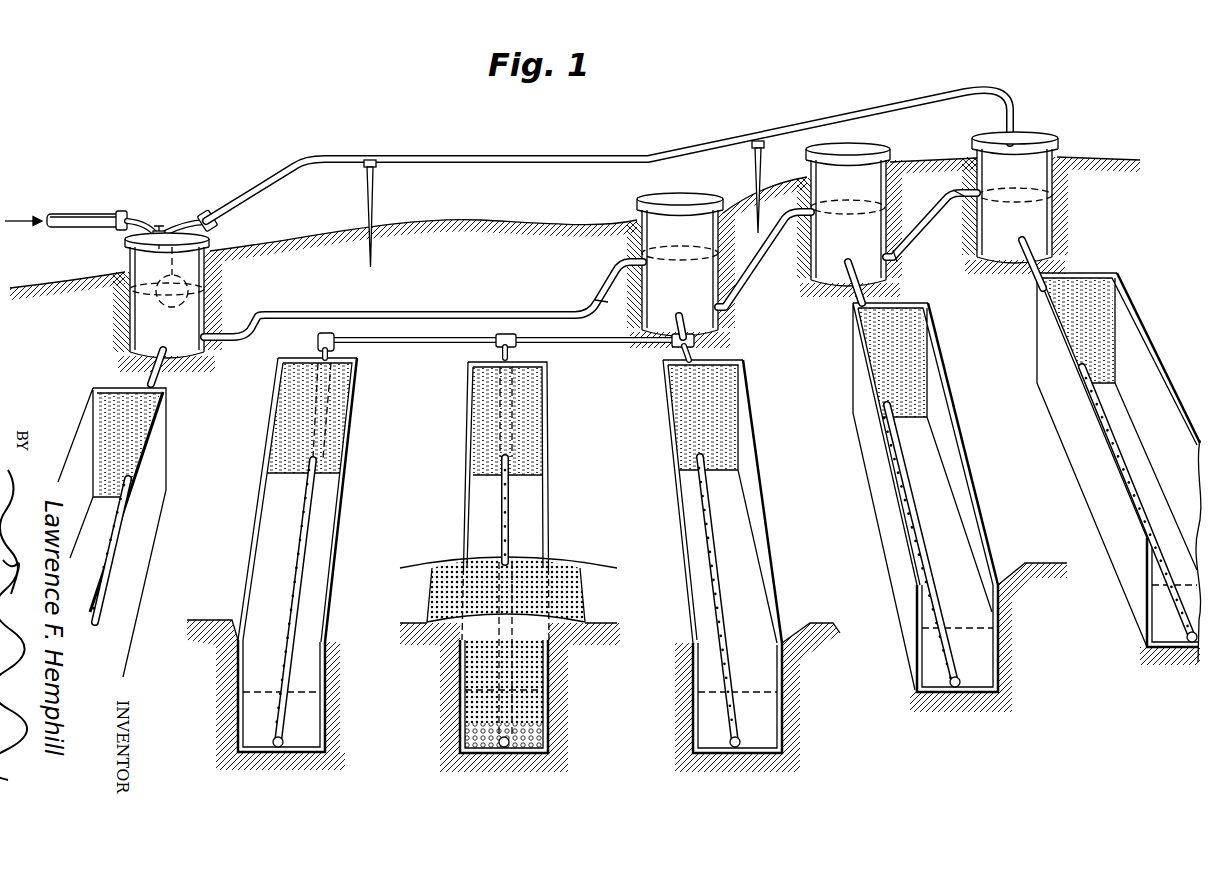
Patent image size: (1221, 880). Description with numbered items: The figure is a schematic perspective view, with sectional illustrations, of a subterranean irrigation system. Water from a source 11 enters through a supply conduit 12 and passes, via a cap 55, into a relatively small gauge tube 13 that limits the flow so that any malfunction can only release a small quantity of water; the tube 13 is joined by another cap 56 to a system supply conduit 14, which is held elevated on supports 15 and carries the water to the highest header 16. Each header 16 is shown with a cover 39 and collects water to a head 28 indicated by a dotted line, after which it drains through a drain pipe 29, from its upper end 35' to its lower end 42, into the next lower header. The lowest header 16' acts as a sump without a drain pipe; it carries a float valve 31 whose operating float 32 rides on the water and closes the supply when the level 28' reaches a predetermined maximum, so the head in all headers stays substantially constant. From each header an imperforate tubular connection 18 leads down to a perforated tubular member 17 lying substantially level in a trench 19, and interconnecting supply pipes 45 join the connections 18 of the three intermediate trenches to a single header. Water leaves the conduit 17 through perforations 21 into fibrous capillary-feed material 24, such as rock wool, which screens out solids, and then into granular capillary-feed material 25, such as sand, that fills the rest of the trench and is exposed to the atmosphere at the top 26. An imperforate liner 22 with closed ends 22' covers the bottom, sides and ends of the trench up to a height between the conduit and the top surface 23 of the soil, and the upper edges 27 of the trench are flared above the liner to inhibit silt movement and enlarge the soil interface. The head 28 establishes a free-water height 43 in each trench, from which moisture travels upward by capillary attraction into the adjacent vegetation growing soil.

The water source 11 is at (22, 214).
The supply conduit 12 is at (97, 199).
The cap 55 is at (126, 210).
The small gauge tube 13 is at (141, 222).
The float valve 31 is at (170, 230).
The cap 56 is at (212, 212).
The system supply conduit 14 is at (268, 182).
The supports 15 is at (375, 190).
The tank cover 39 is at (125, 240).
The sump header 16' is at (135, 302).
The header 16 is at (845, 232).
The water level in sump 28' is at (476, 272).
The head of water 28 is at (869, 246).
The operating float 32 is at (192, 293).
The drain pipe 29 is at (601, 288).
The upper end of drain 35' is at (781, 249).
The lower end of drain pipe 42 is at (900, 262).
The interconnecting supply pipes 45 is at (453, 342).
The imperforate tubular connection 18 is at (160, 380).
The imperforate liner 22 is at (629, 481).
The closed ends 22' is at (630, 370).
The perforated tubular member 17 is at (130, 510).
The perforations 21 is at (110, 562).
The top surface of soil 23 is at (222, 617).
The flared upper edges 27 is at (218, 642).
The free-water height 43 is at (305, 693).
The top of trench 26 is at (479, 575).
The granular capillary-feed material 25 is at (530, 678).
The fibrous capillary-feed material 24 is at (530, 735).
The trench 19 is at (530, 756).